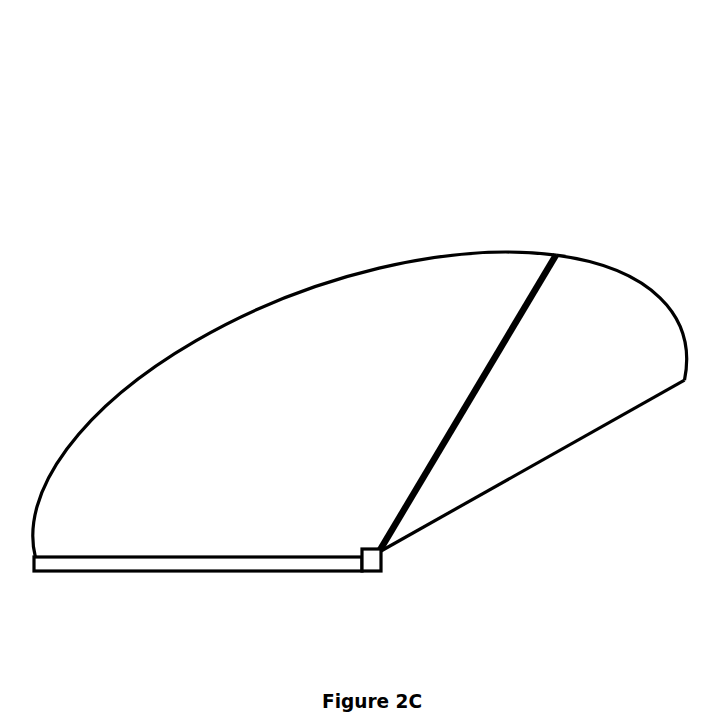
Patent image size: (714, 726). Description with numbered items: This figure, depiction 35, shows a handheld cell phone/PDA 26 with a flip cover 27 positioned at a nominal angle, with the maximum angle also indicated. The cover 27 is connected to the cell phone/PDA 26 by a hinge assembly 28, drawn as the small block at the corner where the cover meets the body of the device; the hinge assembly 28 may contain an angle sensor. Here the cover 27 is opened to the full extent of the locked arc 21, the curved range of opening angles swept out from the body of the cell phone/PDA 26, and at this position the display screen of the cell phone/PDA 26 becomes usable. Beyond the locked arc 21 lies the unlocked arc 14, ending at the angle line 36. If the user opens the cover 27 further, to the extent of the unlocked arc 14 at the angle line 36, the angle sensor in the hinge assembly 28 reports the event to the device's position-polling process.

The depiction of cover open to the extent of locked arc 35 is at (288, 92).
The locked arc 21 is at (320, 283).
The unlocked arc 14 is at (633, 277).
The cover 27 is at (508, 342).
The angle line 36 is at (533, 468).
The cell phone/PDA 26 is at (238, 573).
The hinge assembly 28 is at (383, 562).